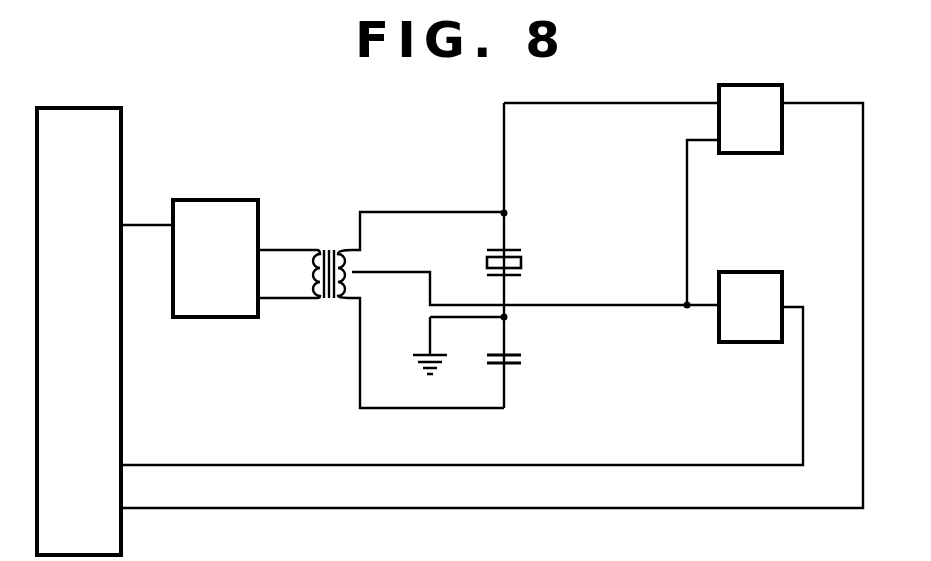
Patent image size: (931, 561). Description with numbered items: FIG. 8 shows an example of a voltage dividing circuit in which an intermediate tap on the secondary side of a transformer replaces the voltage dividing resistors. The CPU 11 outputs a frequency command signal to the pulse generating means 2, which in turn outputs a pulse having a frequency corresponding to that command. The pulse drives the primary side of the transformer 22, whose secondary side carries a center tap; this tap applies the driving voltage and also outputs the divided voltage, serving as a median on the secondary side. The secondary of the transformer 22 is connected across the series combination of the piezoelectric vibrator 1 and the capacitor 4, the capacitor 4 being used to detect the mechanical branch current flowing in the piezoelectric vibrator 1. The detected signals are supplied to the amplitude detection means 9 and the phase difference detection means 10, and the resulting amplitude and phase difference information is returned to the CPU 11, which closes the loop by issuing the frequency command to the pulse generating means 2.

The CPU 11 is at (100, 108).
The pulse generating means 2 is at (240, 200).
The transformer 22 is at (320, 248).
The piezoelectric vibrator 1 is at (527, 262).
The capacitor 4 is at (527, 360).
The phase difference detection means 10 is at (784, 129).
The amplitude detection means 9 is at (784, 283).